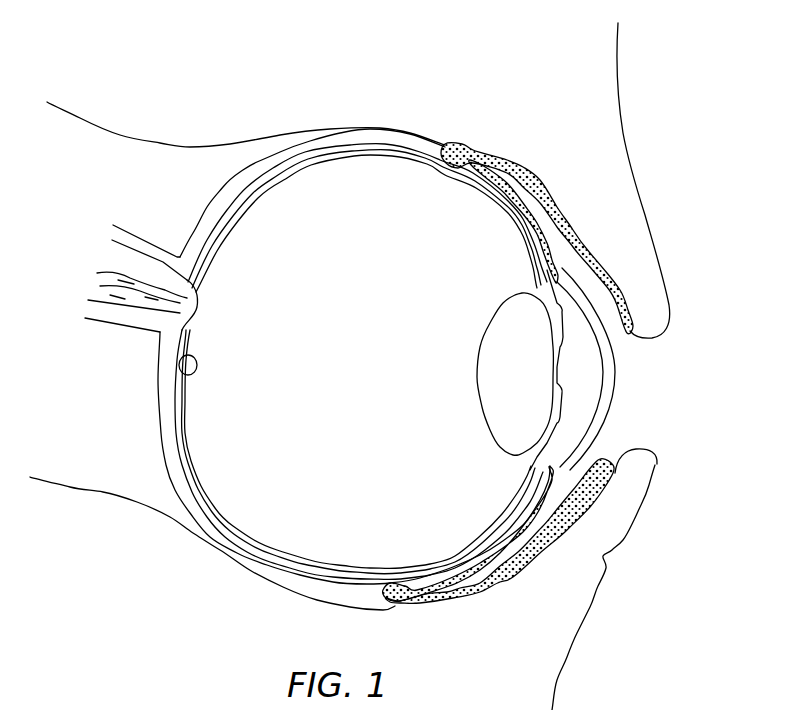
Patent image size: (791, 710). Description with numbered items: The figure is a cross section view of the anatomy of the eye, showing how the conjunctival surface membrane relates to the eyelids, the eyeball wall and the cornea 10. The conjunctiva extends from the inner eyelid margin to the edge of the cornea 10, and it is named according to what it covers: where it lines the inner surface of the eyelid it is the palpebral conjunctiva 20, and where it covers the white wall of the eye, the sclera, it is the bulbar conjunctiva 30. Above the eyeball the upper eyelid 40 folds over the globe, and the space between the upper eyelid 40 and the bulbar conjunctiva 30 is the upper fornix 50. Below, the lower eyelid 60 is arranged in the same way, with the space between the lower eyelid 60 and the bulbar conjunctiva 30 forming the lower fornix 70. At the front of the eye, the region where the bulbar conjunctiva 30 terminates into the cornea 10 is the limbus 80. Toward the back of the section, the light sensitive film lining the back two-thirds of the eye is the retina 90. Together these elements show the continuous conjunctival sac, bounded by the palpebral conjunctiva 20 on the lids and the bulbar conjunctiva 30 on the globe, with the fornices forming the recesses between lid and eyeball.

The cornea 10 is at (615, 380).
The palpebral conjunctiva 20 is at (567, 230).
The bulbar conjunctiva 30 is at (518, 188).
The upper eyelid 40 is at (650, 307).
The upper fornix 50 is at (547, 230).
The lower eyelid 60 is at (637, 460).
The lower fornix 70 is at (603, 556).
The limbus 80 is at (550, 287).
The retina 90 is at (186, 370).